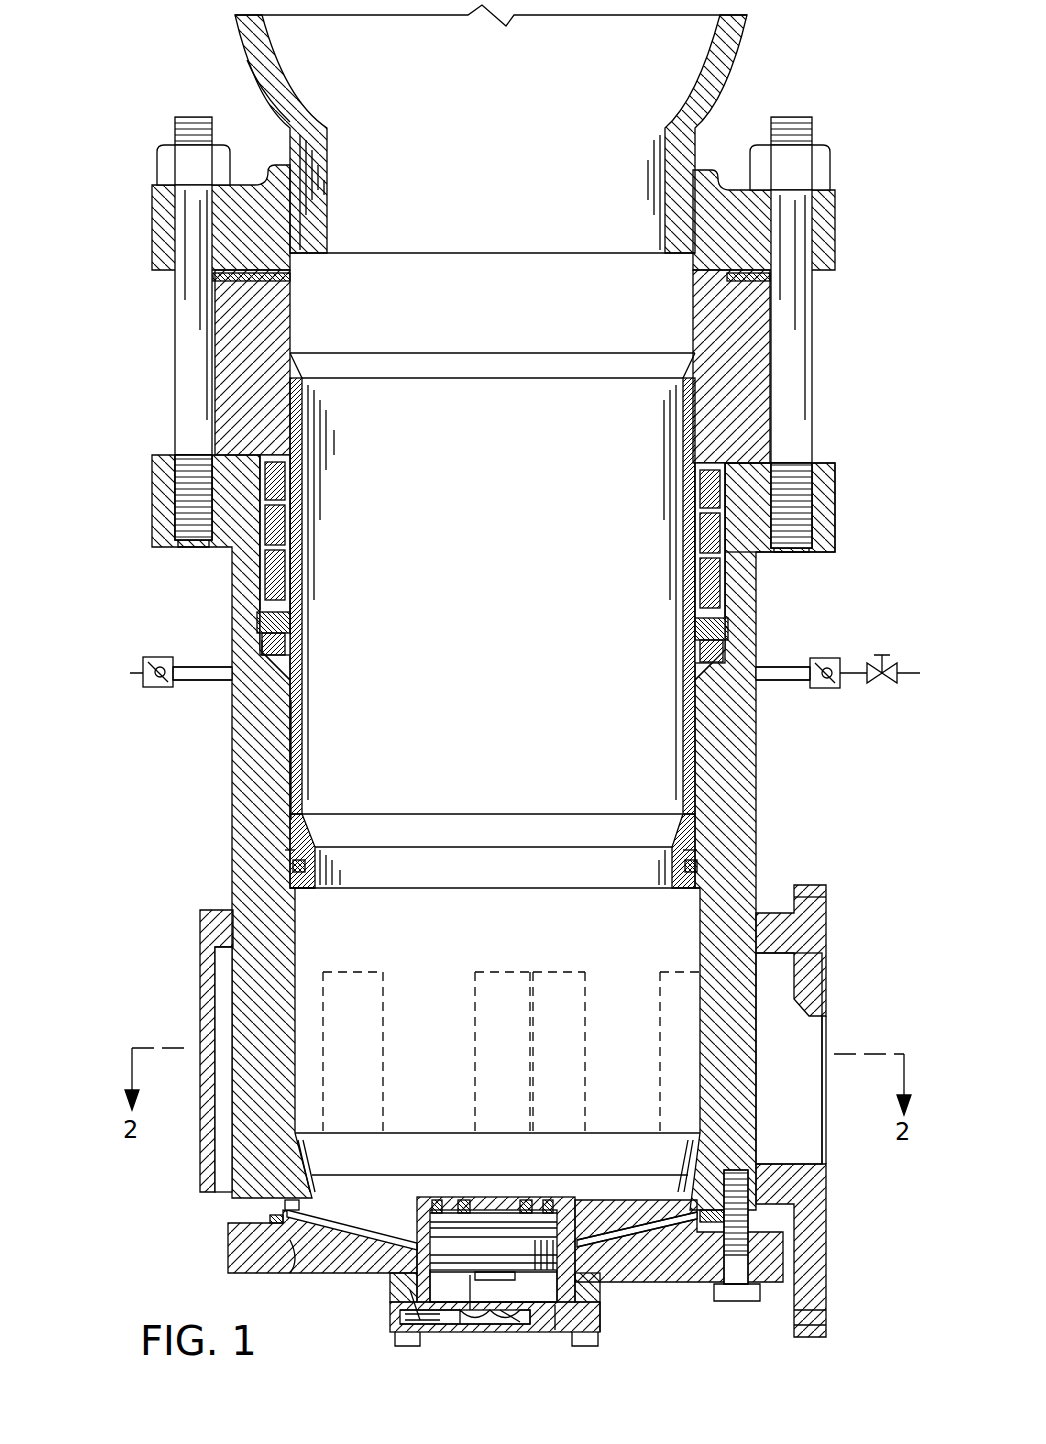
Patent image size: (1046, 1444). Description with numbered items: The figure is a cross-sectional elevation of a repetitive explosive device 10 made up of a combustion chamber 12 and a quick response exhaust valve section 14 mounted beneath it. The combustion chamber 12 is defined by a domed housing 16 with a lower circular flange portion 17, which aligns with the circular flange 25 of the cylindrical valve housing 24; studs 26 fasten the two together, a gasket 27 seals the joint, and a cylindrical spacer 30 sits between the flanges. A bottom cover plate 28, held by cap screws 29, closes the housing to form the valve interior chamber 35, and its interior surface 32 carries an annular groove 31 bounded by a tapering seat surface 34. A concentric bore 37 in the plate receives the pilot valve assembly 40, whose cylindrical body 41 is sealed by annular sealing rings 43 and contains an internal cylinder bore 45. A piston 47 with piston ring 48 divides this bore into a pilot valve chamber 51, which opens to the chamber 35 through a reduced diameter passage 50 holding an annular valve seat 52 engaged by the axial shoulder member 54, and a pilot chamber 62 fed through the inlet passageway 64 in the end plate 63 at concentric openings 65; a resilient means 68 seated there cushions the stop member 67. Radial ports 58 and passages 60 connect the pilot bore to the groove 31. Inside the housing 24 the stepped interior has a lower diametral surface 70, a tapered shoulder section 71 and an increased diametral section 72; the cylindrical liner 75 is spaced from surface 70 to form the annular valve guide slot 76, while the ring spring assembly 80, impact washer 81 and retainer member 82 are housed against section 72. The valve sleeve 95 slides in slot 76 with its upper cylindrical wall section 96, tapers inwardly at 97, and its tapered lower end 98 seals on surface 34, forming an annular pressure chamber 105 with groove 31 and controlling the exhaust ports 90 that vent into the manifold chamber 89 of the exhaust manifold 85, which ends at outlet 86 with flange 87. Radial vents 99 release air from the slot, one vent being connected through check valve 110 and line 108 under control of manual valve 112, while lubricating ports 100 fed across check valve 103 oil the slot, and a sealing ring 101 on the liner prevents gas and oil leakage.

The repetitive explosive device 10 is at (768, 75).
The combustion chamber 12 is at (740, 50).
The quick response exhaust valve section 14 is at (236, 602).
The housing 16 is at (247, 60).
The lower circular flange portion 17 is at (718, 176).
The valve housing 24 is at (740, 638).
The circular flange 25 is at (836, 490).
The studs 26 is at (175, 412).
The gasket 27 is at (213, 278).
The bottom cover plate 28 is at (228, 1260).
The cap screws 29 is at (738, 1302).
The cylindrical spacer 30 is at (240, 357).
The annular groove 31 is at (270, 1220).
The interior surface 32 is at (360, 1222).
The seat surface 34 is at (302, 1273).
The valve interior chamber 35 is at (518, 526).
The concentric bore 37 is at (408, 1197).
The pilot valve assembly 40 is at (388, 1300).
The cylindrical body 41 is at (590, 1292).
The annular sealing rings 43 is at (430, 1210).
The internal cylinder bore 45 is at (440, 1332).
The piston 47 is at (540, 1240).
The piston ring 48 is at (558, 1332).
The reduced diameter passage 50 is at (465, 1200).
The pilot valve chamber 51 is at (438, 1200).
The annular valve seat 52 is at (530, 1235).
The axial shoulder member 54 is at (493, 1210).
The radial ports 58 is at (395, 1282).
The passages 60 is at (635, 1235).
The pilot chamber 62 is at (550, 1300).
The pilot valve end plate 63 is at (600, 1330).
The inlet passageway 64 is at (400, 1330).
The concentric openings 65 is at (518, 1325).
The stop member 67 is at (470, 1312).
The resilient means 68 is at (495, 1282).
The lower diametral surface 70 is at (290, 897).
The tapered shoulder section 71 is at (275, 660).
The increased diametral section 72 is at (262, 647).
The cylindrical liner 75 is at (300, 742).
The annular valve guide slot 76 is at (292, 786).
The ring spring assembly 80 is at (288, 540).
The annular impact washer 81 is at (290, 622).
The retainer member 82 is at (285, 644).
The exhaust manifold 85 is at (200, 950).
The outlet 86 is at (802, 1090).
The flange 87 is at (808, 890).
The manifold chamber 89 is at (222, 1022).
The exhaust ports 90 is at (352, 975).
The valve sleeve 95 is at (700, 900).
The upper cylindrical wall section 96 is at (290, 850).
The inward taper 97 is at (303, 1143).
The tapered lower end 98 is at (285, 1205).
The radial vents 99 is at (760, 680).
The lubricating ports 100 is at (240, 680).
The sealing ring 101 is at (293, 866).
The check valve 103 is at (158, 657).
The annular pressure chamber 105 is at (705, 1222).
The line 108 is at (845, 674).
The check valve 110 is at (825, 658).
The manual valve 112 is at (885, 660).